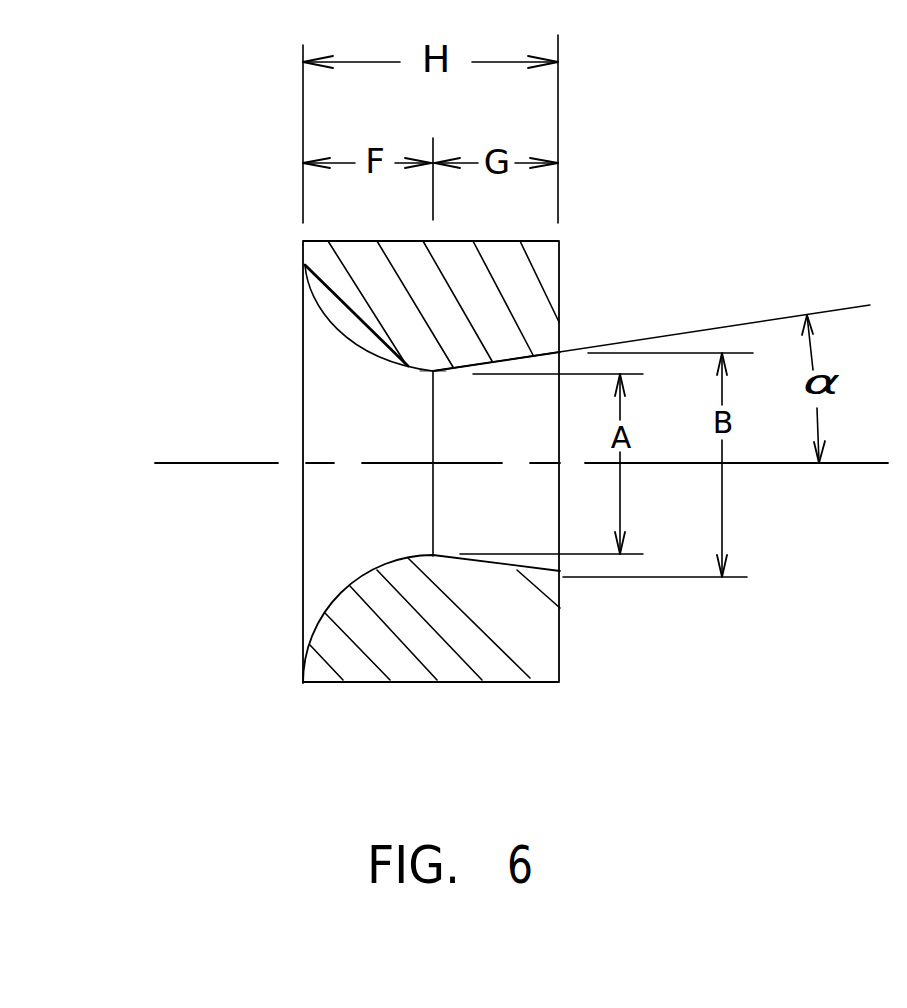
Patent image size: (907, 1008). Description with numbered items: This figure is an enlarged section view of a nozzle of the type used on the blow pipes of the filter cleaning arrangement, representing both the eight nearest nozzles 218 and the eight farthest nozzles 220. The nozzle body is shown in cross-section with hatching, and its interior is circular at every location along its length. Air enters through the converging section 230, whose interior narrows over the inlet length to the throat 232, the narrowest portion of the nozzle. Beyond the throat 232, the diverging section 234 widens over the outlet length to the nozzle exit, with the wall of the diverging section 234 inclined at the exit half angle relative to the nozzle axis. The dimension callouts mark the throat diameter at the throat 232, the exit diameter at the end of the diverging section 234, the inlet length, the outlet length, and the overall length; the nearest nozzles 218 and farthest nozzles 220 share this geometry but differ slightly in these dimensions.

The nearest nozzles 218 is at (559, 640).
The farthest nozzles 220 is at (536, 464).
The converging section 230 is at (347, 342).
The throat 232 is at (430, 374).
The diverging section 234 is at (455, 370).